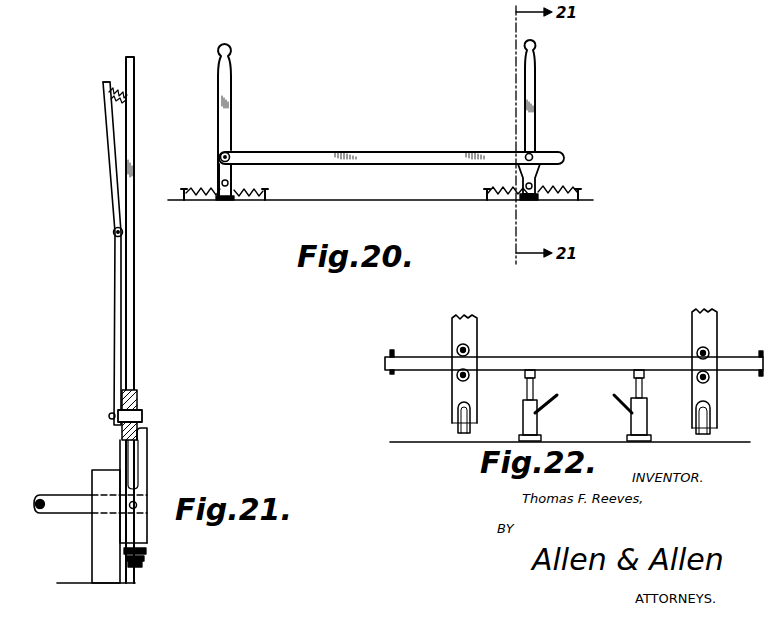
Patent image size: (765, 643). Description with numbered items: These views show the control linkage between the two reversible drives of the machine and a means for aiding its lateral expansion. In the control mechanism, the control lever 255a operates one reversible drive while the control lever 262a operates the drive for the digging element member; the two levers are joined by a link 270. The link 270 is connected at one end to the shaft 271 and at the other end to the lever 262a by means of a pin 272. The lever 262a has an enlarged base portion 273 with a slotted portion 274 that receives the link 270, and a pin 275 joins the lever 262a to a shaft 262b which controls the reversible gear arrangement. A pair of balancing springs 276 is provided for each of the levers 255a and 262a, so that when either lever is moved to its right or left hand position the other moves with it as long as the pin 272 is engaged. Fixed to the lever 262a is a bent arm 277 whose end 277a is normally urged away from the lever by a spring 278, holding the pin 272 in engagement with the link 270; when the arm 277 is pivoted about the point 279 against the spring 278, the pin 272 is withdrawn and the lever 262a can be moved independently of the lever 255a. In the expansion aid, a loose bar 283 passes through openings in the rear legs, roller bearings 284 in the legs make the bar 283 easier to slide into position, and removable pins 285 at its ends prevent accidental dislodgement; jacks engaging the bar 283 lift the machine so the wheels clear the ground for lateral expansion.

In FIG. 20, the control lever 255a is at (232, 72).
In FIG. 20, the control lever 262a is at (536, 63).
In FIG. 21, the control lever 262a is at (136, 142).
In FIG. 21, the shaft 262b is at (50, 494).
In FIG. 20, the link 270 is at (405, 136).
In FIG. 21, the link 270 is at (148, 400).
In FIG. 20, the shaft 271 is at (229, 155).
In FIG. 20, the pin 272 is at (532, 155).
In FIG. 21, the pin 272 is at (143, 418).
In FIG. 21, the enlarged base portion 273 is at (148, 480).
In FIG. 21, the slotted portion 274 is at (150, 437).
In FIG. 21, the pin 275 is at (137, 507).
In FIG. 20, the balancing springs 276 is at (200, 196).
In FIG. 21, the bent arm 277 is at (113, 199).
In FIG. 21, the end of bent arm 277a is at (103, 99).
In FIG. 21, the spring 278 is at (116, 90).
In FIG. 21, the pivot point 279 is at (114, 237).
In FIG. 22, the loose bar 283 is at (572, 357).
In FIG. 22, the roller bearings 284 is at (457, 349).
In FIG. 22, the removable pins 285 is at (392, 374).